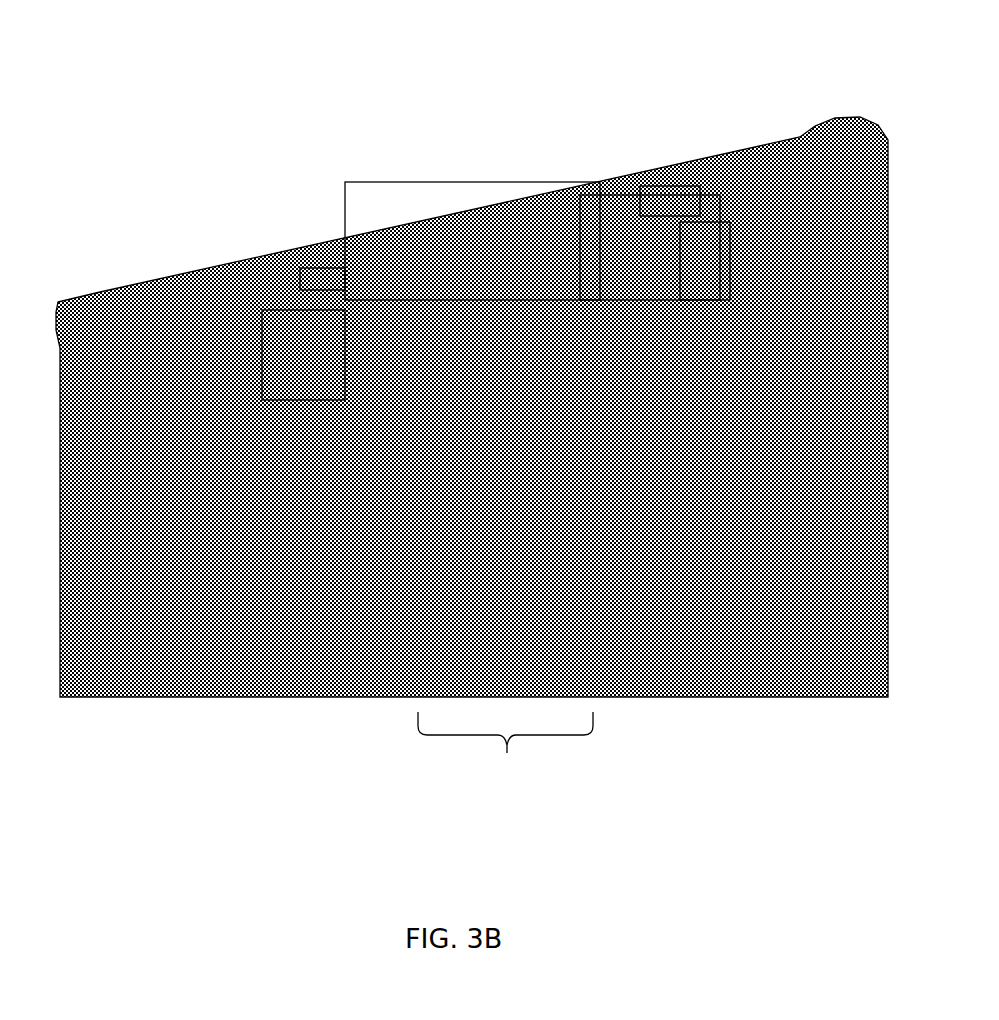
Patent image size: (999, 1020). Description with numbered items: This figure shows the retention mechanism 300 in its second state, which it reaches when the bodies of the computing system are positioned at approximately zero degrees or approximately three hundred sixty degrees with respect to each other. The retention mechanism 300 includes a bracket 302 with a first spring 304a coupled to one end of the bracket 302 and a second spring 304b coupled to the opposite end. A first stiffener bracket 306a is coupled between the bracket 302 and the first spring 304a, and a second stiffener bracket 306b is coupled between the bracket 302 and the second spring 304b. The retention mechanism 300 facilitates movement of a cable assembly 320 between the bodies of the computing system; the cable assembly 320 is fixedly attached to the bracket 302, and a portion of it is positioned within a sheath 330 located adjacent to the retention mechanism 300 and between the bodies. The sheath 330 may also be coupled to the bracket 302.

The retention mechanism 300 is at (880, 66).
The bracket 302 is at (601, 200).
The first spring 304a is at (273, 324).
The second spring 304b is at (692, 222).
The first stiffener bracket 306a is at (326, 273).
The second stiffener bracket 306b is at (660, 188).
The cable assembly 320 is at (505, 753).
The sheath 330 is at (441, 203).